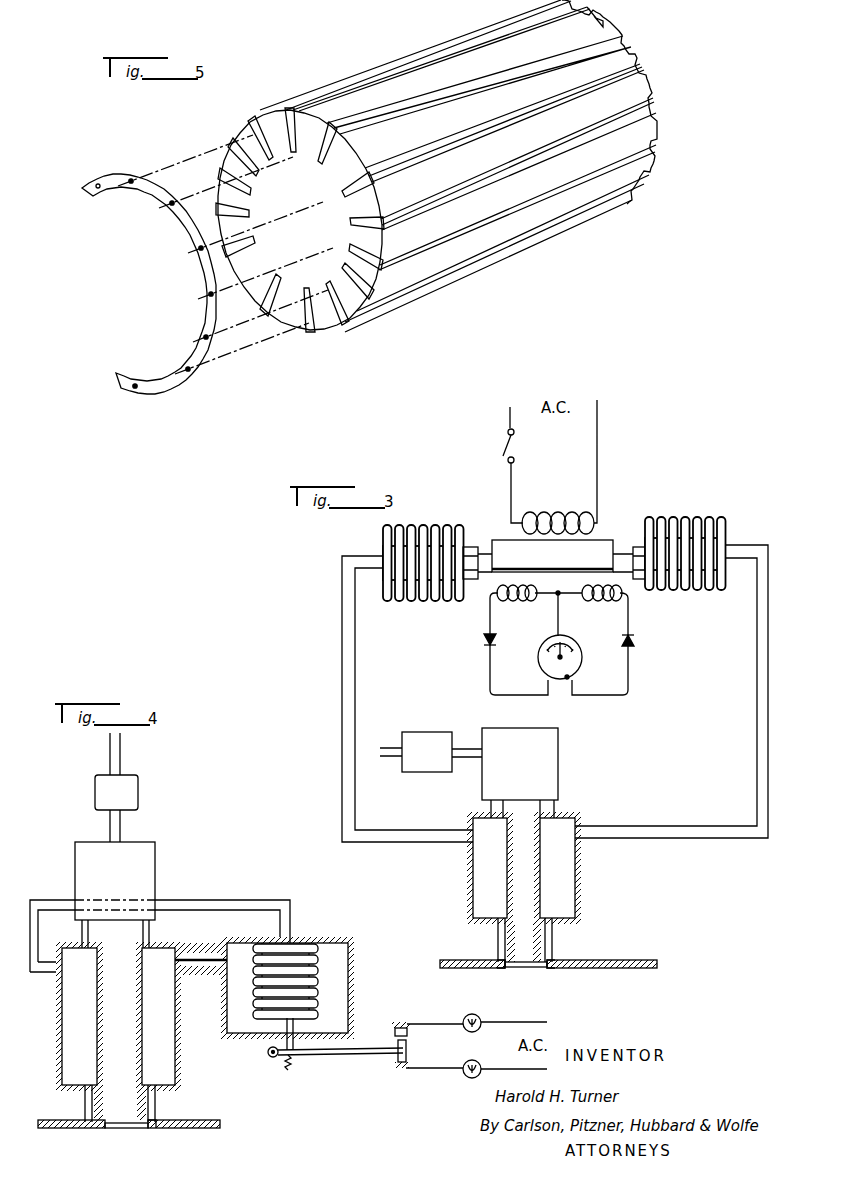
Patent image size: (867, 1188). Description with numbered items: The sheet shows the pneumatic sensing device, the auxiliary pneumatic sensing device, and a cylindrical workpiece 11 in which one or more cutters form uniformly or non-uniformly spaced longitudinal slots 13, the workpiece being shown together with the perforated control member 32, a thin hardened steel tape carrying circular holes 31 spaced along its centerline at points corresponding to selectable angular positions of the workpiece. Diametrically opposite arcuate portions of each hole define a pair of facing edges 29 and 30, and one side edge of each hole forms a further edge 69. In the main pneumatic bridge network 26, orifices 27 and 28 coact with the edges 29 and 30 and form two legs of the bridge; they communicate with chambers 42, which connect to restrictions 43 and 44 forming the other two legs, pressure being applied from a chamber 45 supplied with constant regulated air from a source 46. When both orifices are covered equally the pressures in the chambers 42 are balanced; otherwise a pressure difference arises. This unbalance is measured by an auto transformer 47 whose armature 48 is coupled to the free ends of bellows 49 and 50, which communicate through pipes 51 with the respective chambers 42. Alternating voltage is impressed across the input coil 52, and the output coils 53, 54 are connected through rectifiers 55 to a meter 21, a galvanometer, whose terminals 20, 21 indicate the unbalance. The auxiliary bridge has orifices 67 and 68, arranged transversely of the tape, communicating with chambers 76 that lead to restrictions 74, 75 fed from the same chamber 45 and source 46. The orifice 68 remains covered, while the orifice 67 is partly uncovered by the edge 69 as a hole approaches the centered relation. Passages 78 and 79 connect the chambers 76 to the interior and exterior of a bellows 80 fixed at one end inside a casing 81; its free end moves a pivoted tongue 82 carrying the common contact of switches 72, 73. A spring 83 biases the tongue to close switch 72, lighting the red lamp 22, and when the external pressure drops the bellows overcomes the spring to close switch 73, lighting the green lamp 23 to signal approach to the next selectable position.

In FIG. 5, the cylindrical workpiece 11 is at (392, 62).
In FIG. 5, the longitudinal slots 13 is at (583, 54).
In FIG. 3, the indicating meter 20 is at (545, 668).
In FIG. 3, the meter 21 is at (580, 669).
In FIG. 4, the red signal lamp 22 is at (477, 1032).
In FIG. 4, the green signal lamp 23 is at (485, 1065).
In FIG. 3, the pneumatic bridge network 26 is at (518, 887).
In FIG. 3, the orifice 27 is at (499, 940).
In FIG. 3, the orifice 28 is at (553, 938).
In FIG. 3, the edge 29 is at (505, 969).
In FIG. 3, the edge 30 is at (548, 968).
In FIG. 5, the holes 31 is at (170, 206).
In FIG. 3, the holes 31 is at (525, 968).
In FIG. 4, the holes 31 is at (120, 1128).
In FIG. 5, the control member 32 is at (205, 318).
In FIG. 3, the control member 32 is at (628, 968).
In FIG. 4, the control member 32 is at (55, 1130).
In FIG. 3, the chambers 42 is at (480, 873).
In FIG. 3, the restriction 43 is at (497, 806).
In FIG. 3, the restriction 44 is at (550, 810).
In FIG. 3, the chamber 45 is at (548, 748).
In FIG. 4, the chamber 45 is at (85, 870).
In FIG. 3, the source 46 is at (433, 738).
In FIG. 4, the source 46 is at (100, 792).
In FIG. 3, the auto transformer 47 is at (609, 522).
In FIG. 3, the armature 48 is at (535, 549).
In FIG. 3, the bellows 49 is at (688, 518).
In FIG. 3, the bellows 50 is at (450, 526).
In FIG. 3, the pipes 51 is at (348, 686).
In FIG. 3, the input coil 52 is at (559, 516).
In FIG. 3, the output coil 53 is at (516, 601).
In FIG. 3, the output coil 54 is at (603, 601).
In FIG. 3, the rectifiers 55 is at (484, 641).
In FIG. 4, the orifice 67 is at (156, 1103).
In FIG. 4, the orifice 68 is at (88, 1108).
In FIG. 4, the edge 69 is at (151, 1128).
In FIG. 4, the switch 72 is at (412, 1033).
In FIG. 4, the switch 73 is at (398, 1059).
In FIG. 4, the restriction 74 is at (82, 943).
In FIG. 4, the restriction 75 is at (150, 935).
In FIG. 4, the chambers 76 is at (68, 1025).
In FIG. 4, the passage 78 is at (238, 900).
In FIG. 4, the passage 79 is at (205, 962).
In FIG. 4, the bellows 80 is at (316, 981).
In FIG. 4, the casing 81 is at (340, 942).
In FIG. 4, the pivoted tongue 82 is at (320, 1057).
In FIG. 4, the spring 83 is at (288, 1070).